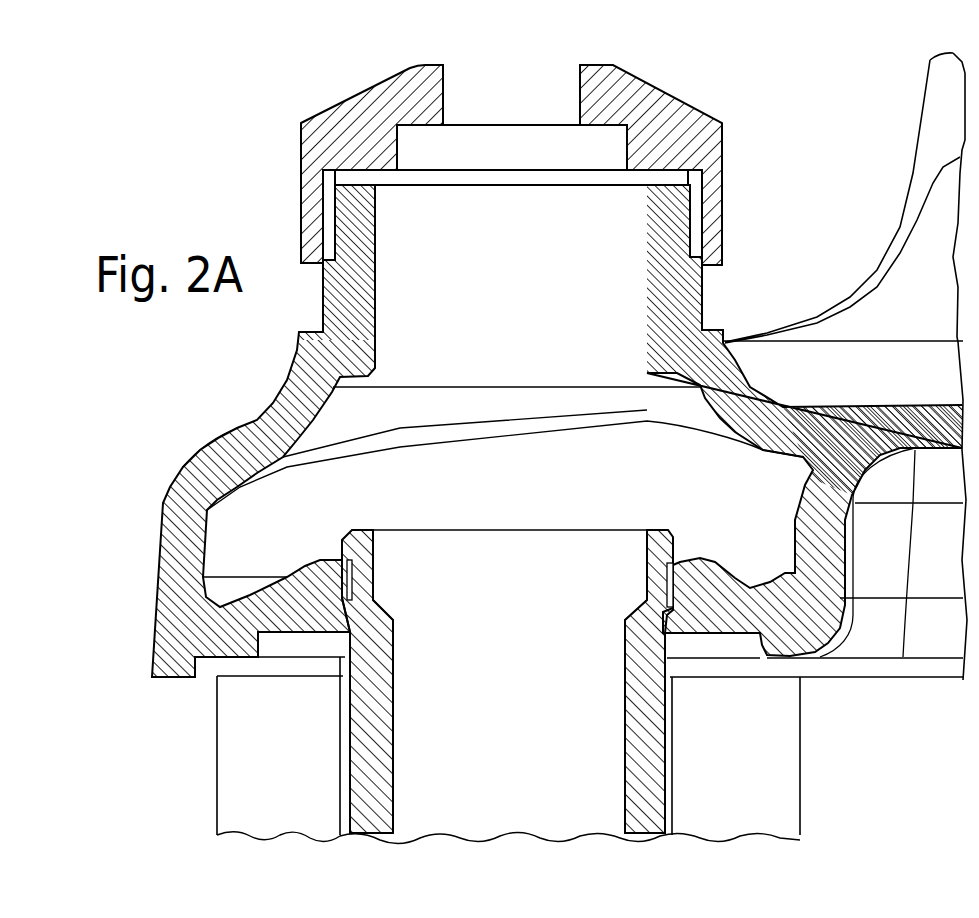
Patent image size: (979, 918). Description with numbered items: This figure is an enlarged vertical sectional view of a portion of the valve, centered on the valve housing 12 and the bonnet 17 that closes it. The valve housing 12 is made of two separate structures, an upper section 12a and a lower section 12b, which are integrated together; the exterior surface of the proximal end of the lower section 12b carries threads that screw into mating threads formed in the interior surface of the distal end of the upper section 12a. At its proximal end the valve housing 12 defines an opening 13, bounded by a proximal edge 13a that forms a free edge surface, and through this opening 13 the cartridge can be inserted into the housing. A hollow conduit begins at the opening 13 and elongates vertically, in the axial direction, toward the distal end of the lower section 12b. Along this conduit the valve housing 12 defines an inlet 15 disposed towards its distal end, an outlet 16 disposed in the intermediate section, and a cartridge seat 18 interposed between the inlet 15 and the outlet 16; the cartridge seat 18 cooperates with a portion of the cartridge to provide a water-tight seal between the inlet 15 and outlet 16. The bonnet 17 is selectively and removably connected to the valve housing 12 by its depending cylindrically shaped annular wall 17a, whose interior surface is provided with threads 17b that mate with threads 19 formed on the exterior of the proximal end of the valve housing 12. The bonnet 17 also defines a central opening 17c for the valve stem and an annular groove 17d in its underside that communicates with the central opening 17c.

The valve housing 12 is at (489, 483).
The upper section 12a is at (160, 530).
The lower section 12b is at (358, 780).
The opening 13 is at (460, 107).
The proximal edge 13a is at (284, 122).
The inlet 15 is at (520, 800).
The outlet 16 is at (780, 510).
The bonnet 17 is at (498, 137).
The annular wall 17a is at (718, 205).
The threads 17b is at (325, 202).
The central opening 17c is at (580, 100).
The annular groove 17d is at (623, 153).
The cartridge seat 18 is at (640, 612).
The threads 19 is at (320, 238).